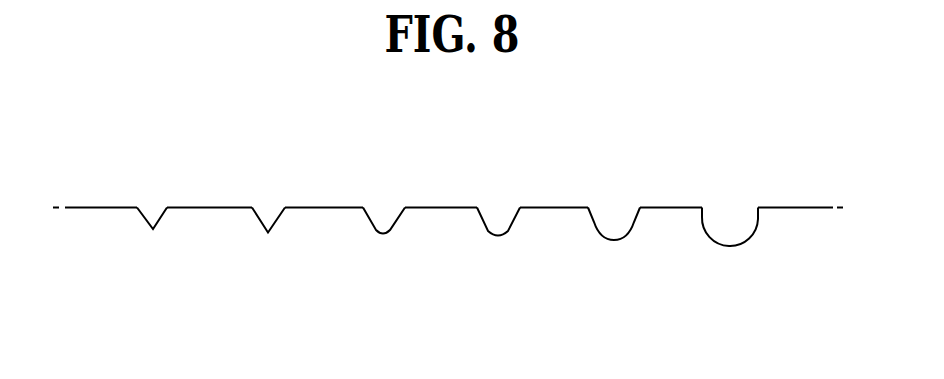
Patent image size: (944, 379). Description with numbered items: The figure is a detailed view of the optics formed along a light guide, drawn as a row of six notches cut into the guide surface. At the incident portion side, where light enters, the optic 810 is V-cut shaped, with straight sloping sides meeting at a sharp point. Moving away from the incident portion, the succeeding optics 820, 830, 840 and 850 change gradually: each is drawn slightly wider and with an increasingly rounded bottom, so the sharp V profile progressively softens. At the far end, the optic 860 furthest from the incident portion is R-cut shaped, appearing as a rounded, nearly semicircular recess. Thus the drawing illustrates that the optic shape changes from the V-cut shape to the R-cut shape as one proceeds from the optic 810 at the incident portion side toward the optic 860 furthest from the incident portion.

The optic 810 is at (163, 221).
The optic 820 is at (279, 223).
The optic 830 is at (398, 223).
The optic 840 is at (518, 224).
The optic 850 is at (636, 223).
The optic 860 is at (756, 232).